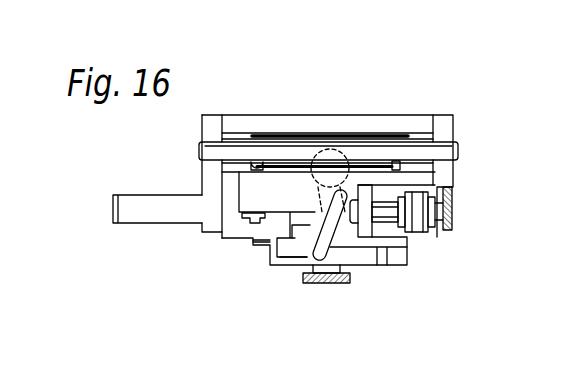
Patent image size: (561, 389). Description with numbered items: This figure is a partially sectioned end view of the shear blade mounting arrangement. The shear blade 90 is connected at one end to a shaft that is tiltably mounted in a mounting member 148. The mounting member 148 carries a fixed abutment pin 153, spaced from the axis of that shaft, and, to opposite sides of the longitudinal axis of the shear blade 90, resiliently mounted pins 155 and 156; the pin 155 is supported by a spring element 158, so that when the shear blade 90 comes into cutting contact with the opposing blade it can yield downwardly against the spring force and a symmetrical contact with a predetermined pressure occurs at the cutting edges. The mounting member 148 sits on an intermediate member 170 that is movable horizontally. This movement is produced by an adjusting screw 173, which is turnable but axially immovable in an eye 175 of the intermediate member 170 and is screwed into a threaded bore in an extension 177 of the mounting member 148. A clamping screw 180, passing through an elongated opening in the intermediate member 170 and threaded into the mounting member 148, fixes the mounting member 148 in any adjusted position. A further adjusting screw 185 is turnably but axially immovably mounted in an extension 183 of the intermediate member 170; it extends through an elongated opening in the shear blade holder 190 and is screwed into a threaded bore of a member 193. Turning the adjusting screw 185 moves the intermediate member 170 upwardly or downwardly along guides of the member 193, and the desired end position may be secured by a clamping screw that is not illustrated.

The shear blade 90 is at (464, 150).
The mounting member 148 is at (297, 176).
The fixed abutment pin 153 is at (320, 133).
The resiliently mounted pin 155 is at (257, 163).
The resiliently mounted pin 156 is at (398, 162).
The spring element 158 is at (252, 228).
The intermediate member 170 is at (228, 231).
The adjusting screw 173 is at (455, 212).
The eye 175 is at (417, 225).
The extension 177 is at (395, 247).
The clamping screw 180 is at (298, 263).
The extension 183 is at (274, 255).
The adjusting screw 185 is at (320, 283).
The shear blade holder 190 is at (207, 175).
The member 193 is at (322, 203).